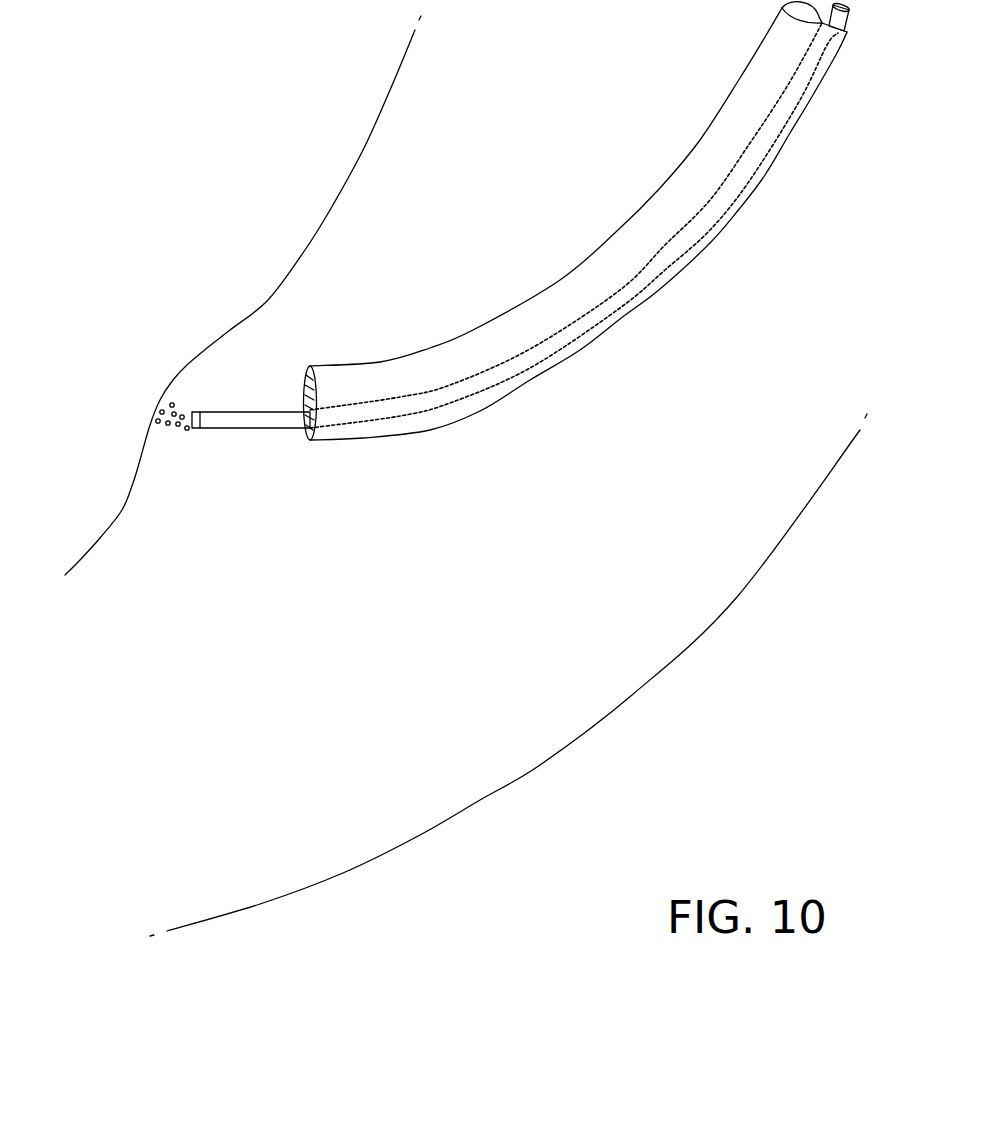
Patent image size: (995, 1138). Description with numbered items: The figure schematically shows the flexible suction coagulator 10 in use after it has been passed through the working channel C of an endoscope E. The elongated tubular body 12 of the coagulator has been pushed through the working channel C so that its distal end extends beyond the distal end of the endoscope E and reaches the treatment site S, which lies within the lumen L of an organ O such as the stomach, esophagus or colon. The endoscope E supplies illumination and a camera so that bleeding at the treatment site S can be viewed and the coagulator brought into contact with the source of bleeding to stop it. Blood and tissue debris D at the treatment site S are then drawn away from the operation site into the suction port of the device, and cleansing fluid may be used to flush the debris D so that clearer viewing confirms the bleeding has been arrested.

The flexible suction coagulator 10 is at (234, 481).
The elongated tubular body 12 is at (263, 423).
The endoscope E is at (618, 230).
The working channel C is at (628, 310).
The treatment site S is at (187, 391).
The blood and tissue debris D is at (163, 425).
The organ O is at (737, 597).
The lumen L is at (605, 668).